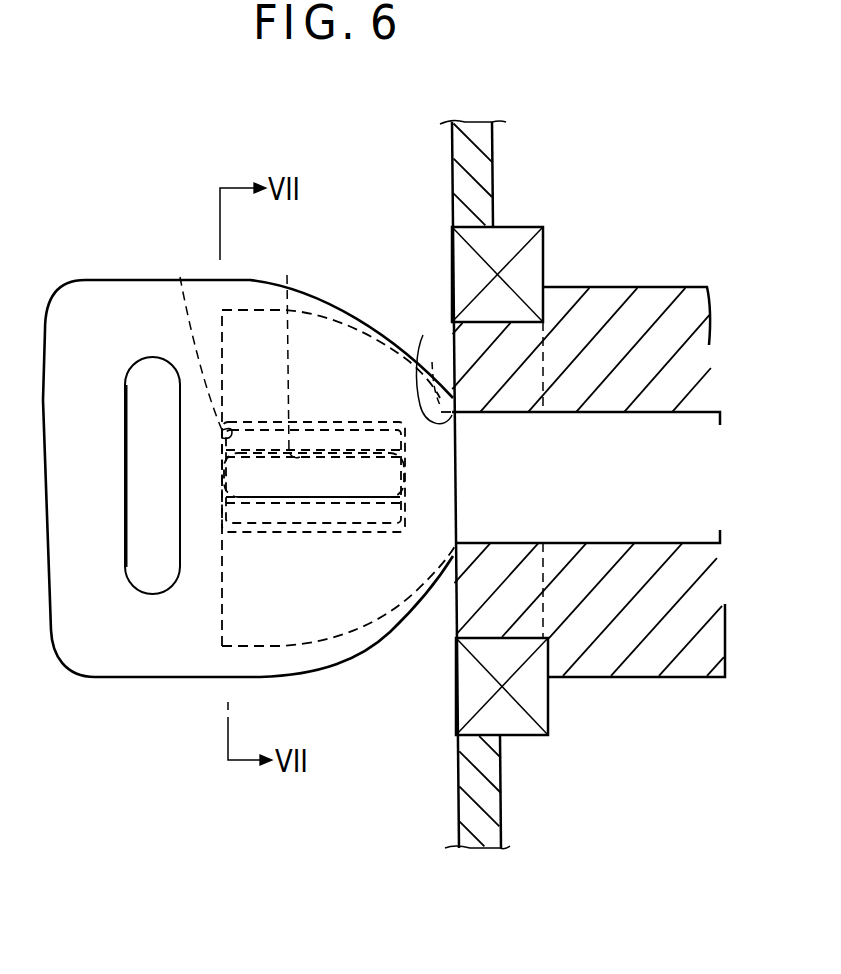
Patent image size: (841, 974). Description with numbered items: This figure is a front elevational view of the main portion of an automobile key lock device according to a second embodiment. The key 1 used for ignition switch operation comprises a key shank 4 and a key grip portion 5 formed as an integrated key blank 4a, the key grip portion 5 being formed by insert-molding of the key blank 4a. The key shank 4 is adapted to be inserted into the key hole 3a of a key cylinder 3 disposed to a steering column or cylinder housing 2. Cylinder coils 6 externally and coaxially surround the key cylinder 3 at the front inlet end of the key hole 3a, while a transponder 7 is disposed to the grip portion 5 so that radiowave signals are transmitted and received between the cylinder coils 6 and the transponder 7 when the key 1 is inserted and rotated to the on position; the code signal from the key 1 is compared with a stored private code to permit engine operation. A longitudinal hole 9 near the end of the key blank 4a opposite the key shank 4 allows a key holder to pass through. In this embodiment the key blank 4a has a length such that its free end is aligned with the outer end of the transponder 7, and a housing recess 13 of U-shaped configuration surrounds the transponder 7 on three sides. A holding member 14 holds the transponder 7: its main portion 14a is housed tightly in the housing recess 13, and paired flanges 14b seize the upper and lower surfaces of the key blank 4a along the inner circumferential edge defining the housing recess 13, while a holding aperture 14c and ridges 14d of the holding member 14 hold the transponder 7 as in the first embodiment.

The key 1 is at (137, 223).
The cylinder housing 2 is at (452, 183).
The key cylinder 3 is at (645, 287).
The key hole 3a is at (425, 361).
The key shank 4 is at (624, 528).
The key blank 4a is at (222, 568).
The key grip portion 5 is at (83, 282).
The cylinder coils 6 is at (525, 227).
The transponder 7 is at (343, 453).
The longitudinal hole 9 is at (133, 568).
The housing recess 13 is at (197, 341).
The holding member 14 is at (222, 517).
The main portion 14a is at (318, 528).
The flanges 14b is at (357, 532).
The holding aperture 14c is at (291, 349).
The ridges 14d is at (223, 468).